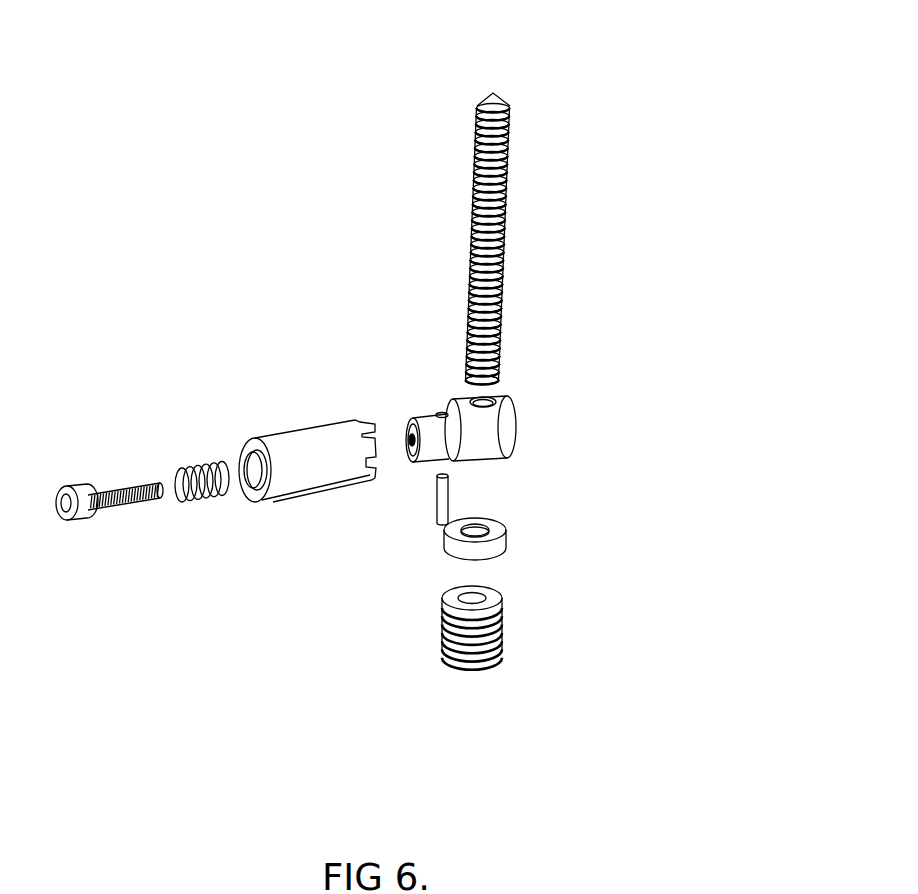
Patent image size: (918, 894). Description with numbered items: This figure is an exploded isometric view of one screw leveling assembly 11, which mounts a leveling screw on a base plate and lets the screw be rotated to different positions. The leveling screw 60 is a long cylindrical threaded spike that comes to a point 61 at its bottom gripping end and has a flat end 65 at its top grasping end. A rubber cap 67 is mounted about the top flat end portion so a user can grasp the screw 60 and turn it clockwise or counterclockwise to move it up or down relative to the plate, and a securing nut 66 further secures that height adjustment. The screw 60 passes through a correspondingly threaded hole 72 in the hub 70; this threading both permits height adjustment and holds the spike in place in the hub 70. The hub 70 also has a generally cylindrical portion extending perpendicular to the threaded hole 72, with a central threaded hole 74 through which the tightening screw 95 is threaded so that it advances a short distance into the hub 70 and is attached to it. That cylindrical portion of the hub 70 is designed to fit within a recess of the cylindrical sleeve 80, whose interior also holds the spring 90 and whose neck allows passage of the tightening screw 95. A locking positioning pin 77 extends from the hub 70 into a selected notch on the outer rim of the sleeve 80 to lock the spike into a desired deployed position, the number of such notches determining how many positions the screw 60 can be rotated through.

The screw leveling assembly 11 is at (388, 256).
The leveling screw 60 is at (505, 275).
The point 61 is at (493, 93).
The flat end 65 is at (506, 383).
The hub 70 is at (513, 420).
The threaded hole 72 is at (470, 399).
The central threaded hole 74 is at (407, 435).
The locking positioning pin 77 is at (433, 508).
The securing nut 66 is at (505, 543).
The rubber cap 67 is at (503, 637).
The cylindrical sleeve 80 is at (301, 432).
The spring 90 is at (196, 464).
The tightening screw 95 is at (114, 490).